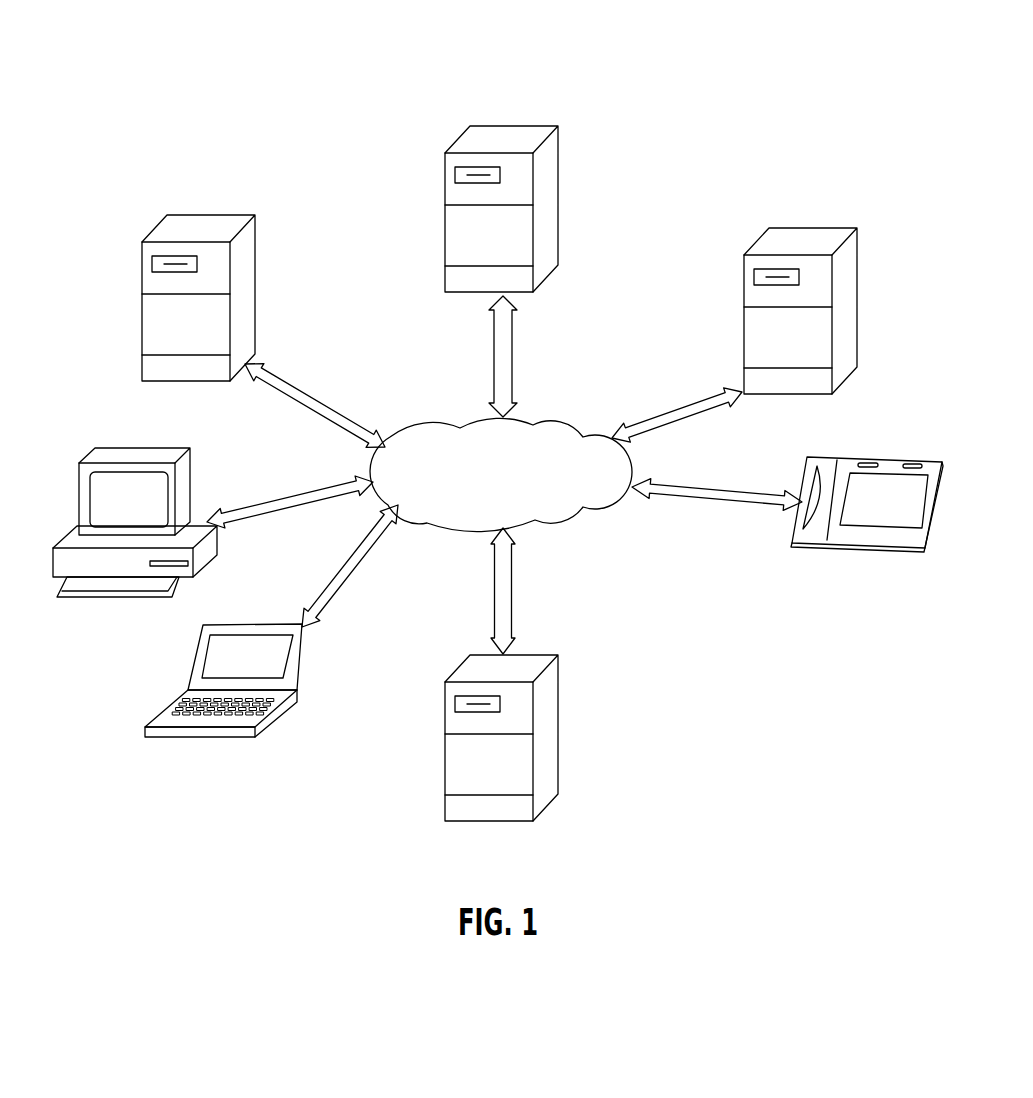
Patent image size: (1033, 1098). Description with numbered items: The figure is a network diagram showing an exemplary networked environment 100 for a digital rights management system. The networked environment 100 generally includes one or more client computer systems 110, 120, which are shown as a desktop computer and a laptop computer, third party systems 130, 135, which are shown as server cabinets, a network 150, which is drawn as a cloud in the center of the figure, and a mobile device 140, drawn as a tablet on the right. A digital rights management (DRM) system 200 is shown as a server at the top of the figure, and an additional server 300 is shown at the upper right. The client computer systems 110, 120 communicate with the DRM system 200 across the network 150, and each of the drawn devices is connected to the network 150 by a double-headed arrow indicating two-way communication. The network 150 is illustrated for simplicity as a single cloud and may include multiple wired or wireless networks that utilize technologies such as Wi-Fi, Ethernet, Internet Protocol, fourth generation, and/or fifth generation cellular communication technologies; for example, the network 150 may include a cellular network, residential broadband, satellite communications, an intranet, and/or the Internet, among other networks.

The networked environment 100 is at (123, 58).
The client computer system 110 is at (190, 487).
The client computer system 120 is at (192, 665).
The third party system 130 is at (445, 708).
The third party system 135 is at (142, 277).
The mobile device 140 is at (883, 550).
The network 150 is at (528, 422).
The digital rights management (DRM) system 200 is at (560, 179).
The server 300 is at (860, 282).